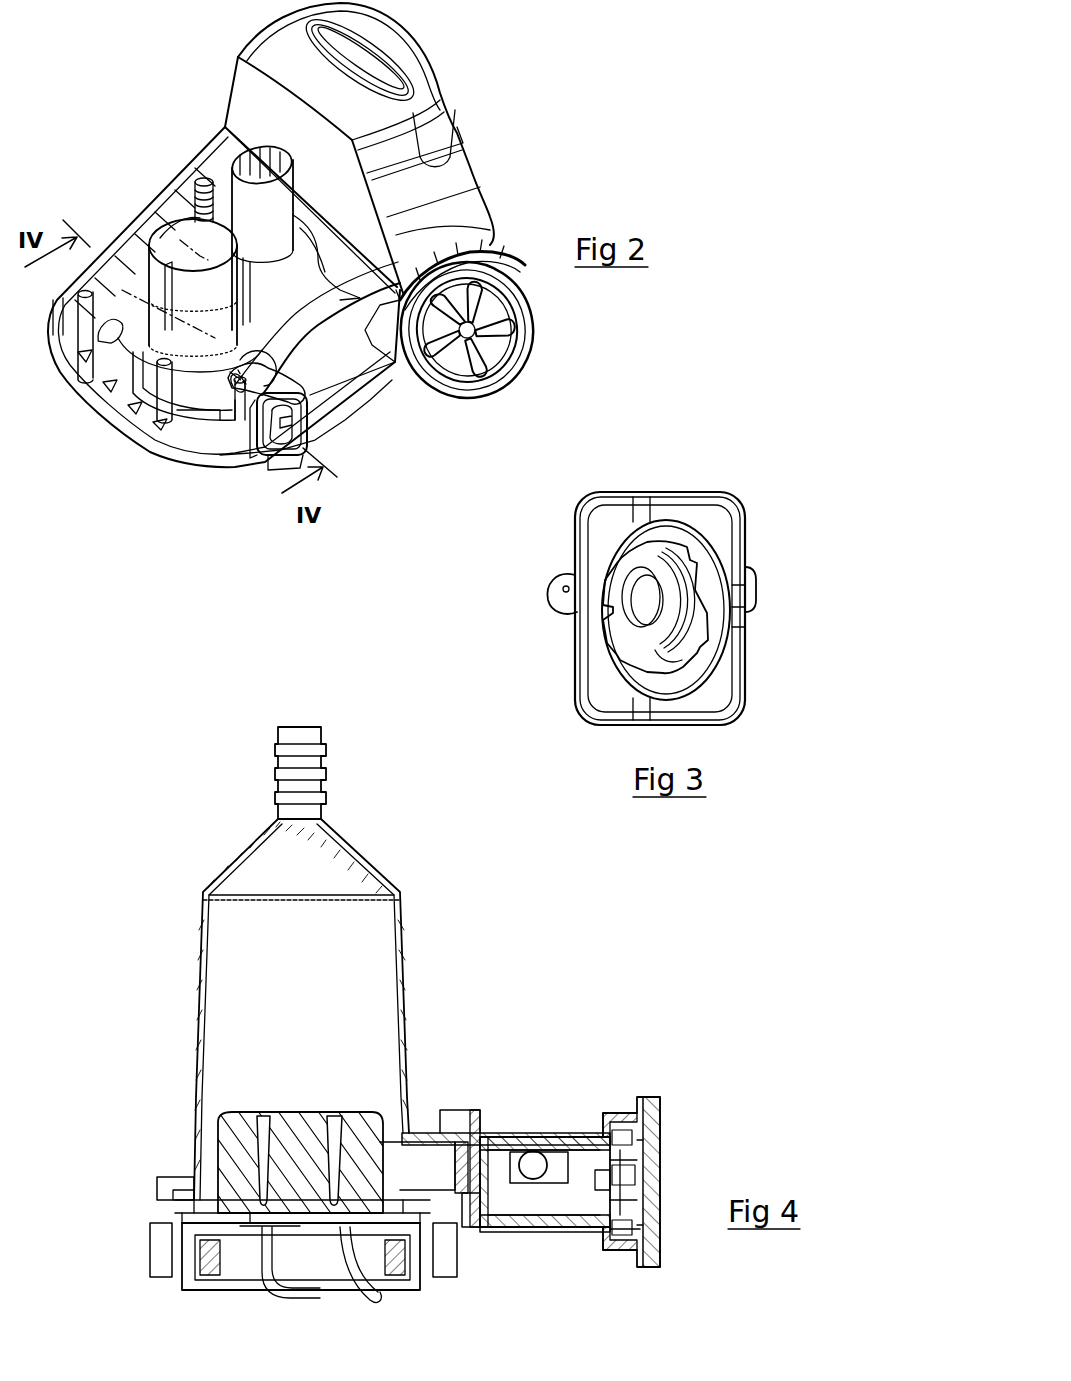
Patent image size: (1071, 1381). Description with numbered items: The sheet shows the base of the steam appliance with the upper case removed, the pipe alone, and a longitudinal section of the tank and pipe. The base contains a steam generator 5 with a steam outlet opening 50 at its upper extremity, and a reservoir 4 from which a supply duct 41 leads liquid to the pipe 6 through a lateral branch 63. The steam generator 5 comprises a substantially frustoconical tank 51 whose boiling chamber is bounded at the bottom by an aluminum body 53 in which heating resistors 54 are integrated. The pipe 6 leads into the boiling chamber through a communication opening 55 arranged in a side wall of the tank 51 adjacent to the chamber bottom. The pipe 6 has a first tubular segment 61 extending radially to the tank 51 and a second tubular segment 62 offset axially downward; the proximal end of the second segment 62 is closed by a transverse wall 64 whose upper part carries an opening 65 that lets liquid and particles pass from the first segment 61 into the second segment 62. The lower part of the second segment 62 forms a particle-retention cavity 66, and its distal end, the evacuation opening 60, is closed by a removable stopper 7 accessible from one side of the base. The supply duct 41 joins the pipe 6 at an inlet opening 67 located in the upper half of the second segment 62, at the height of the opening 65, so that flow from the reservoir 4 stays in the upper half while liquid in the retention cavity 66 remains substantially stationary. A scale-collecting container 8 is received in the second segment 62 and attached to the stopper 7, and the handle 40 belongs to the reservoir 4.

In FIG. 2, the reservoir 4 is at (403, 43).
In FIG. 2, the handle 40 is at (360, 60).
In FIG. 2, the supply duct 41 is at (318, 345).
In FIG. 2, the steam generator 5 is at (157, 277).
In FIG. 4, the steam generator 5 is at (308, 1004).
In FIG. 2, the steam outlet opening 50 is at (205, 181).
In FIG. 4, the steam outlet opening 50 is at (295, 727).
In FIG. 4, the tank 51 is at (196, 1013).
In FIG. 4, the aluminum body 53 is at (228, 1170).
In FIG. 4, the heating resistors 54 is at (343, 1220).
In FIG. 4, the communication opening 55 is at (402, 1157).
In FIG. 2, the pipe 6 is at (240, 400).
In FIG. 3, the pipe 6 is at (780, 507).
In FIG. 4, the pipe 6 is at (573, 1168).
In FIG. 3, the evacuation opening 60 is at (625, 622).
In FIG. 4, the first tubular segment 61 is at (455, 1115).
In FIG. 4, the second tubular segment 62 is at (582, 1133).
In FIG. 2, the lateral branch 63 is at (310, 410).
In FIG. 3, the lateral branch 63 is at (755, 583).
In FIG. 3, the transverse wall 64 is at (633, 640).
In FIG. 4, the transverse wall 64 is at (475, 1220).
In FIG. 3, the opening 65 is at (637, 583).
In FIG. 3, the particle-retention cavity 66 is at (657, 653).
In FIG. 4, the particle-retention cavity 66 is at (533, 1208).
In FIG. 3, the inlet opening 67 is at (677, 588).
In FIG. 4, the inlet opening 67 is at (533, 1160).
In FIG. 4, the removable stopper 7 is at (663, 1173).
In FIG. 4, the scale-collecting container 8 is at (583, 1230).